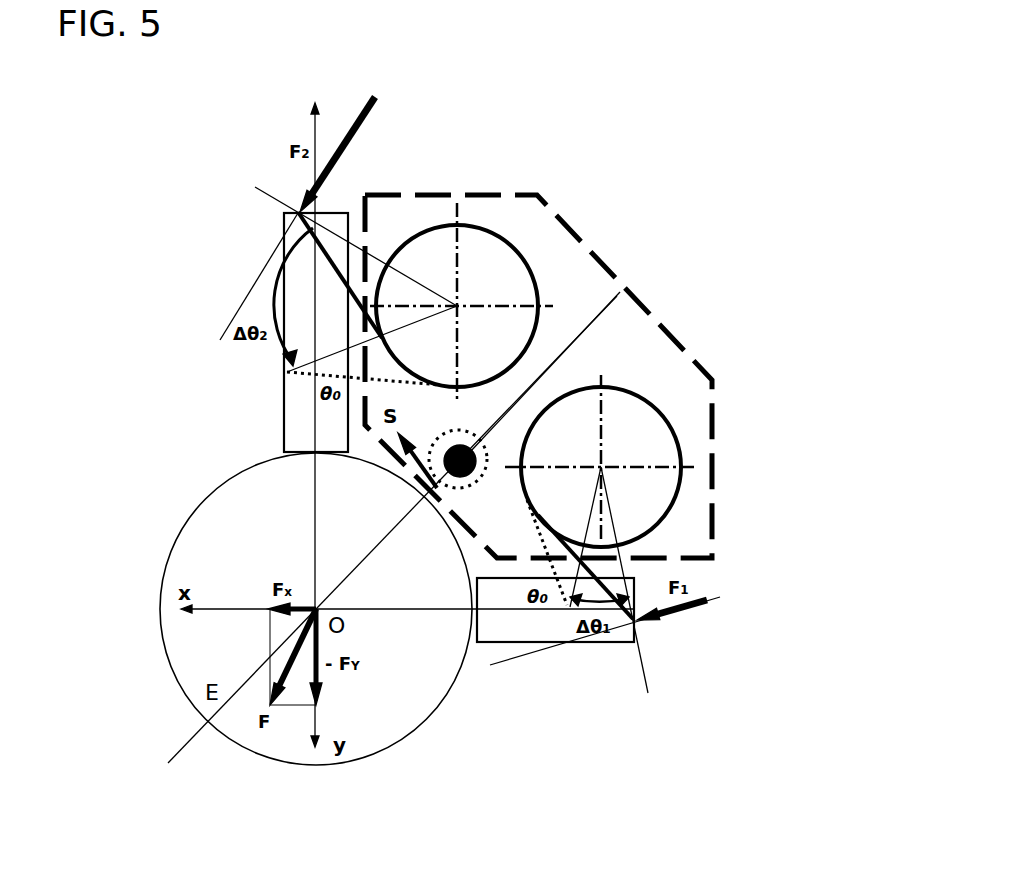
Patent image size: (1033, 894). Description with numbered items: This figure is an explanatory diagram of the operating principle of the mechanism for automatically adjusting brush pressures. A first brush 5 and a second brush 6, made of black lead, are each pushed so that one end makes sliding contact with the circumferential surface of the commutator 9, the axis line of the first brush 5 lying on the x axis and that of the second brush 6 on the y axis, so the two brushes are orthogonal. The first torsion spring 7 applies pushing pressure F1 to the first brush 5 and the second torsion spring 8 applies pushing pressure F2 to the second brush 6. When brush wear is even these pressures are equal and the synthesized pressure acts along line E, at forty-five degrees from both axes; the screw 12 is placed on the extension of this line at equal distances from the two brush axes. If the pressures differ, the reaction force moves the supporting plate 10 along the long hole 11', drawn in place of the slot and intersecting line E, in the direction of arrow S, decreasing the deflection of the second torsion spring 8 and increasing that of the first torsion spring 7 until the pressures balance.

The first brush 5 is at (593, 643).
The second brush 6 is at (284, 424).
The first torsion spring 7 is at (683, 458).
The second torsion spring 8 is at (477, 228).
The commutator 9 is at (180, 520).
The supporting plate 10 is at (686, 352).
The long hole 11' is at (543, 289).
The screw 12 is at (620, 292).